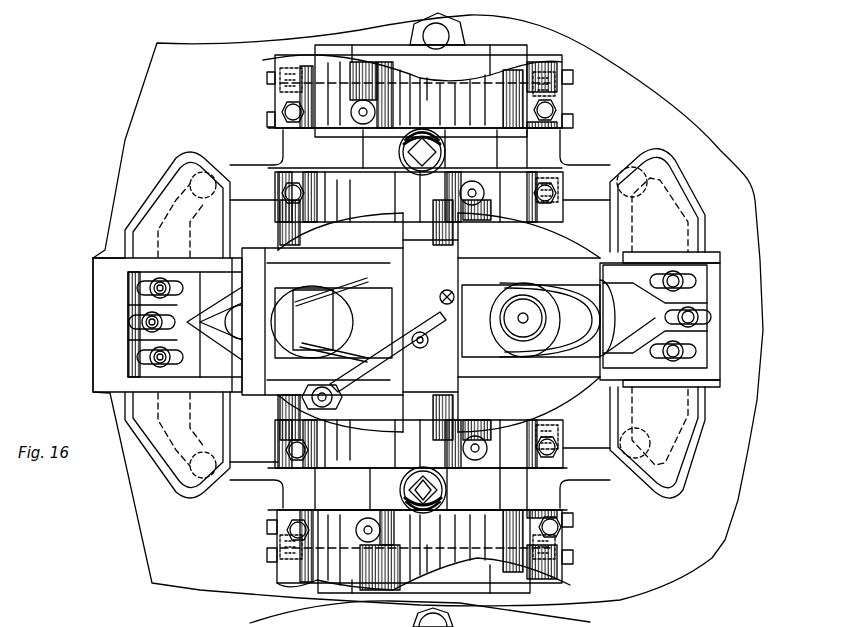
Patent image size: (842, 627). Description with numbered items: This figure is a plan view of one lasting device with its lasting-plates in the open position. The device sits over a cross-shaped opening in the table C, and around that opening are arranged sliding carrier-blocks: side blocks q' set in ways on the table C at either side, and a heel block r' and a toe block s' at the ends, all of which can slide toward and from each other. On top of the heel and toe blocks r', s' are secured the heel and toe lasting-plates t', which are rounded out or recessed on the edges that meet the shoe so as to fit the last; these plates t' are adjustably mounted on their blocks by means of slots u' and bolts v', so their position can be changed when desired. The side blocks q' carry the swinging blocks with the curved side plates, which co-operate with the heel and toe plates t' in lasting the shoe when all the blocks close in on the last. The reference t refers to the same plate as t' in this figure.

The table C is at (428, 319).
The side carrier-block q' is at (417, 319).
The toe carrier-block s' is at (121, 217).
The heel carrier-block r' is at (675, 291).
The left bracket t is at (167, 325).
The heel and toe lasting-plate t' is at (660, 321).
The slot u' is at (148, 322).
The bolt v' is at (445, 294).